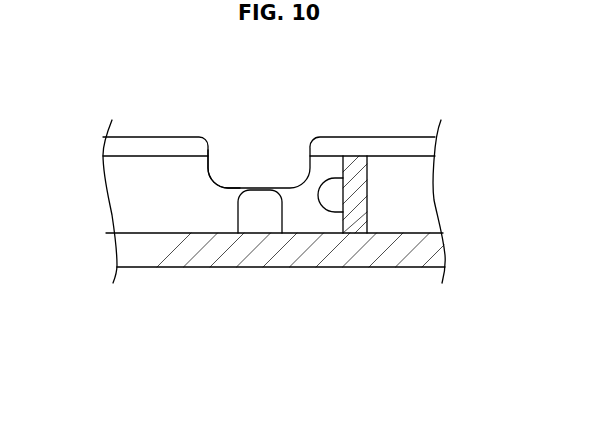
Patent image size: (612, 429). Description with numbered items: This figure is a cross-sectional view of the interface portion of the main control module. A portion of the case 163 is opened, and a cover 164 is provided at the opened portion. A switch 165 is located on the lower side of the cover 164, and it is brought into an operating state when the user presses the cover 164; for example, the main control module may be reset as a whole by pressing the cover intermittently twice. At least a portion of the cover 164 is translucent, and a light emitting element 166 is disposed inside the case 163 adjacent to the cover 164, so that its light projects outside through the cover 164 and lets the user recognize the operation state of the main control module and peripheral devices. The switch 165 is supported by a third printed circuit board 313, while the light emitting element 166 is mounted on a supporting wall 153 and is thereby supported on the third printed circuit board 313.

The case 163 is at (343, 141).
The cover 164 is at (217, 182).
The switch 165 is at (261, 220).
The light emitting element 166 is at (335, 195).
The supporting wall 153 is at (358, 218).
The third printed circuit board 313 is at (359, 258).